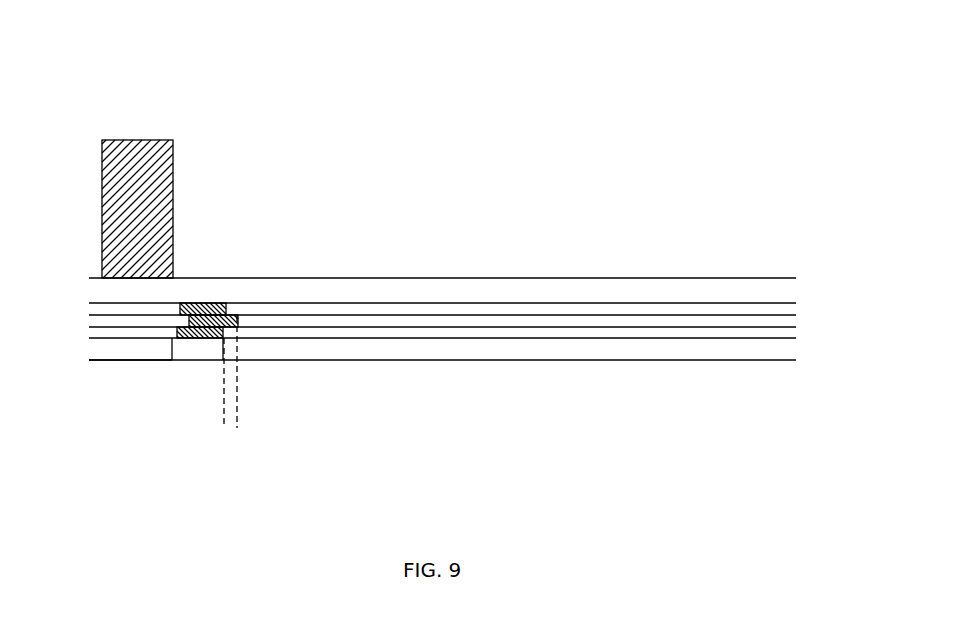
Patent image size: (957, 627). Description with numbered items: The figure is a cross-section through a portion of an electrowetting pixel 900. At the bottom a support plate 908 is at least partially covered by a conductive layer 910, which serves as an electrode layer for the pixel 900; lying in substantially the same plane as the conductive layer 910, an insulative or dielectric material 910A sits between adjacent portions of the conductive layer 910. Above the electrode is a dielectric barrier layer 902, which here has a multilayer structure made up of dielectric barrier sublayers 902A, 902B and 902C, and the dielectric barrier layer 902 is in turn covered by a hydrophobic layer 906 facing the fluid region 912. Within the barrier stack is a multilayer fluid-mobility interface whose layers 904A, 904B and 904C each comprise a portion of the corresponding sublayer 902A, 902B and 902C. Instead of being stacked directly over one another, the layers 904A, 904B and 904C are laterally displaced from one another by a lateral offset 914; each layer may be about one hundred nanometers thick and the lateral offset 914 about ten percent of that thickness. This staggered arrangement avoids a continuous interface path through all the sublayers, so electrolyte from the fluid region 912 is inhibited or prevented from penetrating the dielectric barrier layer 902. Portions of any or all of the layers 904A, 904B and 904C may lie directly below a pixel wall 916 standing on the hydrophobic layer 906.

The electrowetting pixel 900 is at (735, 54).
The dielectric barrier layer 902 is at (474, 282).
The dielectric barrier sublayer 902A is at (435, 327).
The dielectric barrier sublayer 902B is at (525, 316).
The dielectric barrier sublayer 902C is at (633, 304).
The FMI layer 904A is at (213, 338).
The FMI layer 904B is at (233, 316).
The FMI layer 904C is at (195, 303).
The hydrophobic layer 906 is at (764, 278).
The support plate 908 is at (460, 440).
The conductive layer 910 is at (645, 360).
The dielectric material 910A is at (105, 360).
The fluid region 912 is at (655, 205).
The lateral offset 914 is at (165, 412).
The pixel wall 916 is at (173, 145).